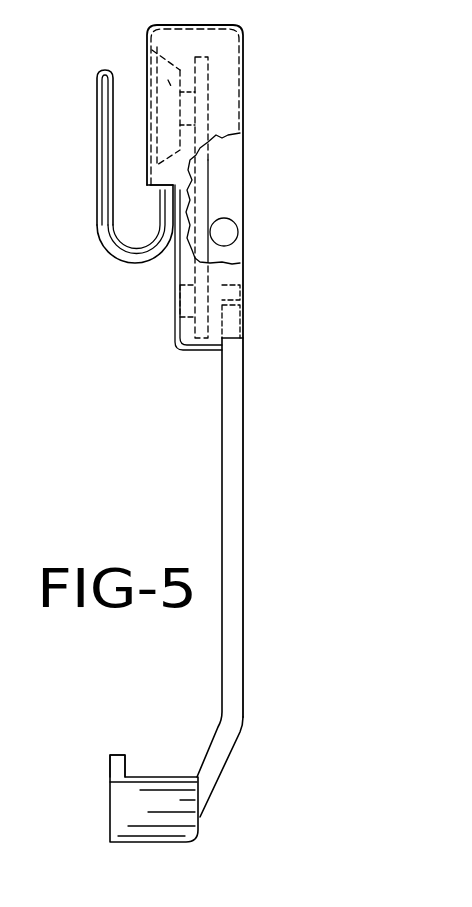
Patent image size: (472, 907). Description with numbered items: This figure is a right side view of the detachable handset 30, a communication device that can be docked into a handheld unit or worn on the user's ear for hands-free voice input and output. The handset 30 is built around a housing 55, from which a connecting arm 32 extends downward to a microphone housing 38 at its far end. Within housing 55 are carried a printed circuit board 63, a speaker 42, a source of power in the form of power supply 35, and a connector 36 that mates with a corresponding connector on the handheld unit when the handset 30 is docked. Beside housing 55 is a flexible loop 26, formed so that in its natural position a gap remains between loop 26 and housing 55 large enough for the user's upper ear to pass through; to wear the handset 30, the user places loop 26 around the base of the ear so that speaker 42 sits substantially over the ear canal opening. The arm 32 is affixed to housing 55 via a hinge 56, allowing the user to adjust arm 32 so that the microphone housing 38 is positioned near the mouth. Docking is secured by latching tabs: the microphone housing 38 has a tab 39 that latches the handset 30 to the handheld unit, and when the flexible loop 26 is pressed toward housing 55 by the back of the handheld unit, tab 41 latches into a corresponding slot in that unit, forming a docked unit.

The flexible loop 26 is at (100, 145).
The detachable handset 30 is at (200, 363).
The connecting arm 32 is at (232, 499).
The power supply 35 is at (225, 235).
The connector 36 is at (191, 305).
The microphone housing 38 is at (155, 843).
The tab 39 is at (112, 758).
The tab 41 is at (162, 190).
The speaker 42 is at (151, 51).
The housing 55 is at (225, 57).
The hinge 56 is at (230, 310).
The printed circuit board 63 is at (203, 192).